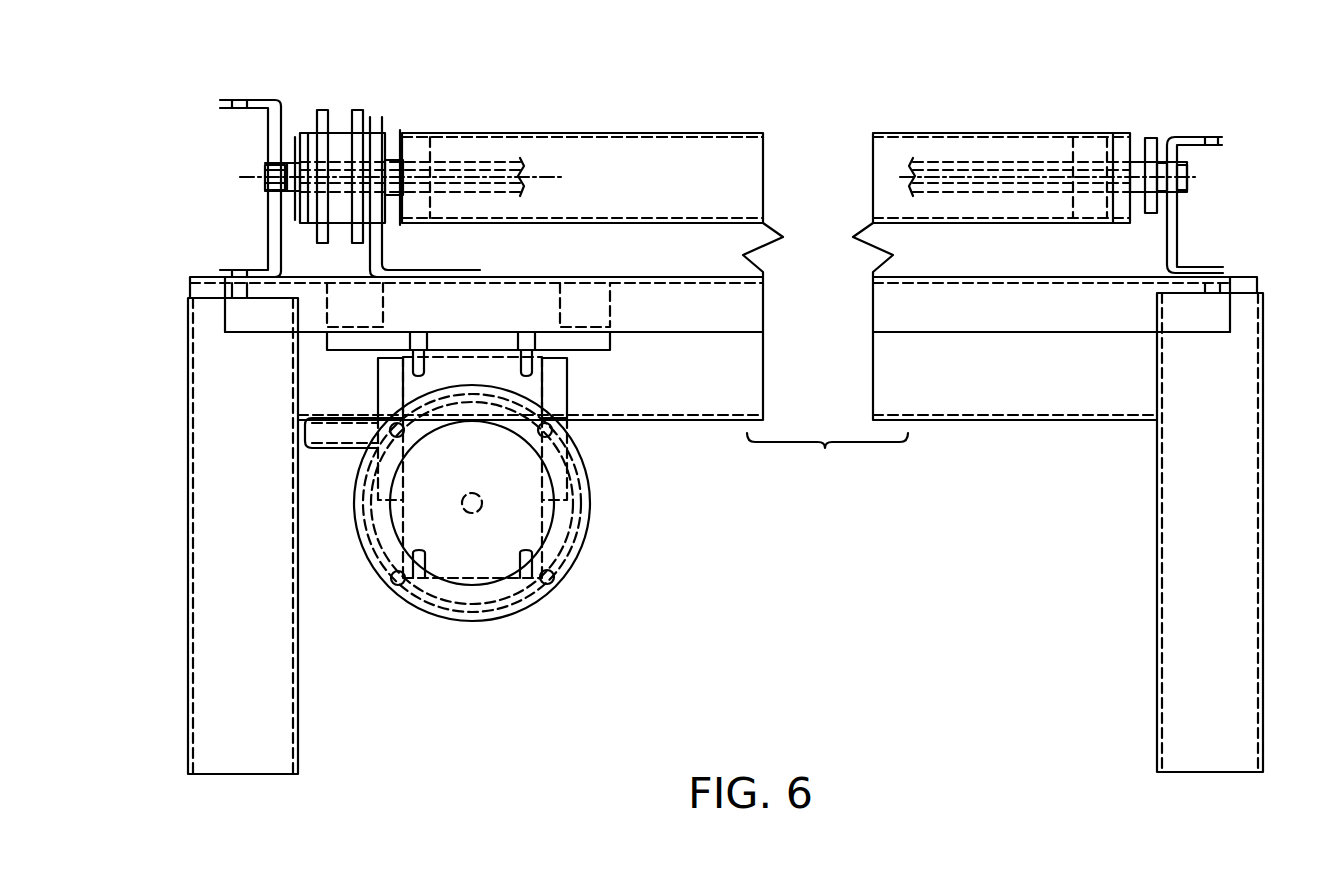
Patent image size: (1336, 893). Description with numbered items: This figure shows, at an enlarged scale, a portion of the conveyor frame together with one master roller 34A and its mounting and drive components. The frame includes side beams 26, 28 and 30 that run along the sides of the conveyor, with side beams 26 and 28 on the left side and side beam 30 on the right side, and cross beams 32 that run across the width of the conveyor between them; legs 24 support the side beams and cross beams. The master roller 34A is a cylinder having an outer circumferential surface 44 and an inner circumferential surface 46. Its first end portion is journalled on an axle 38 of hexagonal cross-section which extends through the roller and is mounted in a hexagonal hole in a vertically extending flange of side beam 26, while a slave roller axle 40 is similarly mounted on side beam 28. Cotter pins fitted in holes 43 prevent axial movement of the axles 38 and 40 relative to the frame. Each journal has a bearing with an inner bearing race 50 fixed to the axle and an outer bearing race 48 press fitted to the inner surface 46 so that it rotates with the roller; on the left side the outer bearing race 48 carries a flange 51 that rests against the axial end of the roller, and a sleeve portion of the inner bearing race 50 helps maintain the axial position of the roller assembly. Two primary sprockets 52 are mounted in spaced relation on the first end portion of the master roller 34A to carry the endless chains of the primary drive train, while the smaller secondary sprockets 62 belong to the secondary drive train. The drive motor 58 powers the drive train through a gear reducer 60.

The legs 24 is at (270, 693).
The side beam 26 is at (267, 100).
The side beam 28 is at (383, 140).
The side beam 30 is at (1218, 137).
The cross beams 32 is at (1062, 318).
The master roller 34A is at (727, 192).
The axle 38 is at (263, 180).
The axle 40 is at (370, 130).
The holes 43 is at (263, 175).
The outer circumferential surface 44 is at (565, 132).
The inner circumferential surface 46 is at (628, 137).
The outer bearing race 48 is at (312, 205).
The inner bearing race 50 is at (303, 197).
The flange 51 is at (295, 137).
The primary sprockets 52 is at (322, 108).
The drive motor 58 is at (560, 520).
The gear reducer 60 is at (490, 550).
The secondary sprockets 62 is at (1150, 140).